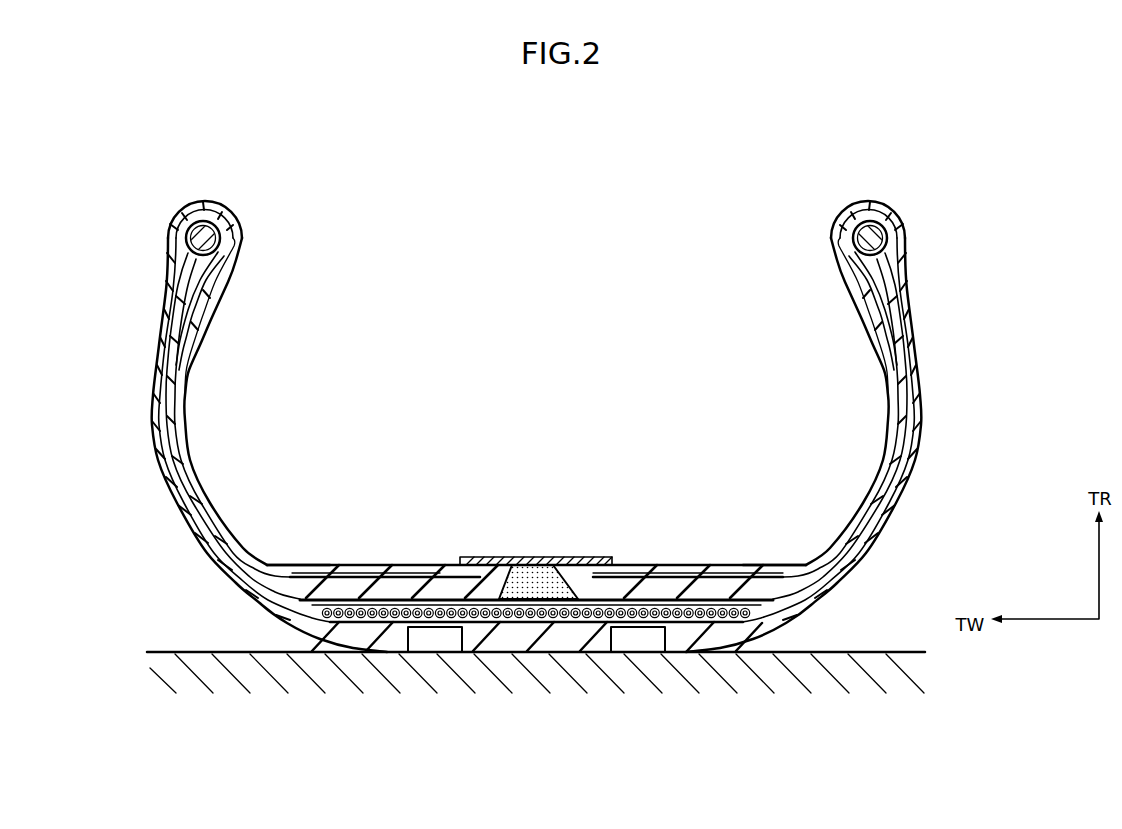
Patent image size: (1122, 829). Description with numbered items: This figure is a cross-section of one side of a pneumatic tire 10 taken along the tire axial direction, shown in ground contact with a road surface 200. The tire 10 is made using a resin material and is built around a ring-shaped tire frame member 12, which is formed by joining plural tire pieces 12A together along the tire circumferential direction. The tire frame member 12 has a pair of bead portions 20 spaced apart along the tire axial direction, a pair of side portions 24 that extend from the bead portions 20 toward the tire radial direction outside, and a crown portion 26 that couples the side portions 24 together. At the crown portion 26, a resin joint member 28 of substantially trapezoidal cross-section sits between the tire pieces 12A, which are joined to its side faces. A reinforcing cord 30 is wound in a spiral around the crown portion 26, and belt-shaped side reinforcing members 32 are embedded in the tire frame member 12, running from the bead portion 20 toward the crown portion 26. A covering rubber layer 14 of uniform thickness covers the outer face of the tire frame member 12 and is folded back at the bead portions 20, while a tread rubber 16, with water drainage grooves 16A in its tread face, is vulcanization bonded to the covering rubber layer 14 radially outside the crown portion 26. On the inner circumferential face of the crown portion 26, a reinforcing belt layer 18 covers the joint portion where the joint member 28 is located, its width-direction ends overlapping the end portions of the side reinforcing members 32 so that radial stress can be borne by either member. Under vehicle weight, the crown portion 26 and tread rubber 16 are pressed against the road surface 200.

The pneumatic tire 10 is at (918, 157).
The tire frame member 12 is at (432, 566).
The tire pieces 12A is at (307, 565).
The covering rubber layer 14 is at (151, 432).
The tread rubber 16 is at (792, 640).
The water drainage grooves 16A is at (440, 642).
The reinforcing belt layer 18 is at (578, 558).
The bead portions 20 is at (240, 232).
The side portions 24 is at (186, 425).
The crown portion 26 is at (655, 598).
The joint member 28 is at (509, 578).
The reinforcing cord 30 is at (342, 606).
The side reinforcing members 32 is at (206, 318).
The road surface 200 is at (864, 655).